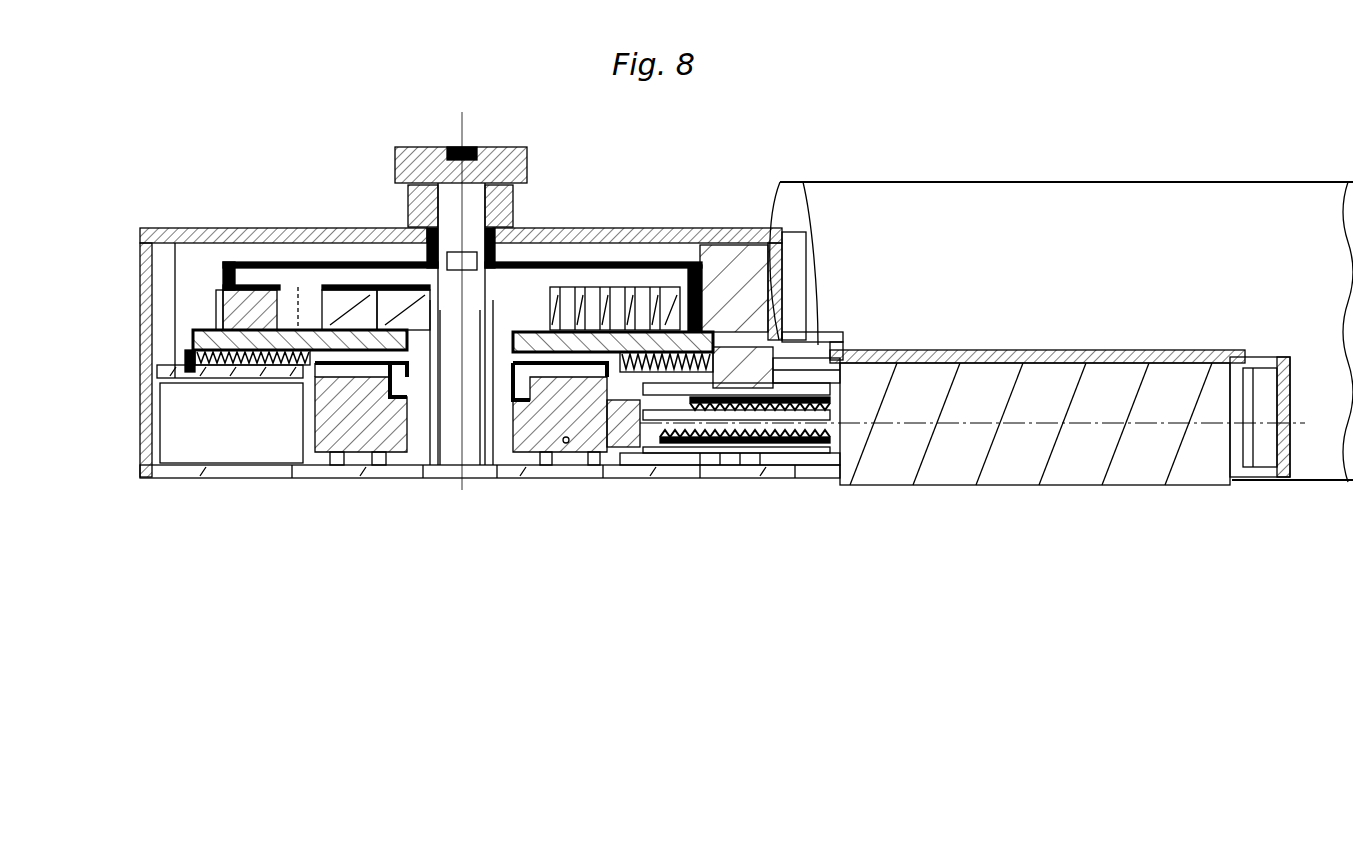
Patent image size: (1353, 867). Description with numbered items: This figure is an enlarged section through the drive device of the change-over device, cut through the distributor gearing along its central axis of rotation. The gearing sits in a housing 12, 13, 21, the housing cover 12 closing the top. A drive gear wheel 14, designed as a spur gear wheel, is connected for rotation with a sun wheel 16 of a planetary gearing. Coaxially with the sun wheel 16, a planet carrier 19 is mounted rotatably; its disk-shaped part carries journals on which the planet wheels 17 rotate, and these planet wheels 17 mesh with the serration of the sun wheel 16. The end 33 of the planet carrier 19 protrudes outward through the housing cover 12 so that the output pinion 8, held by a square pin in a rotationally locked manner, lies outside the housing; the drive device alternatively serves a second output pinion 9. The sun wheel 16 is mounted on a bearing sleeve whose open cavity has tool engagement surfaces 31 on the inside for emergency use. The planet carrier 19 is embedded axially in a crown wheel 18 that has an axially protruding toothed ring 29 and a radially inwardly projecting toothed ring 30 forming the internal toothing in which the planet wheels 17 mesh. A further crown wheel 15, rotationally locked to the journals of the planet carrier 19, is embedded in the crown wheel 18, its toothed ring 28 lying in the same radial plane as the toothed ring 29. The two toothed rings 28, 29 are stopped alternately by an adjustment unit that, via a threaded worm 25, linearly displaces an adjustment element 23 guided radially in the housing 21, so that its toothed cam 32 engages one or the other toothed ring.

The output pinion 8 is at (507, 153).
The output pinion 9 is at (513, 203).
The housing cover 12 is at (208, 228).
The housing part 13 is at (290, 478).
The drive gear wheel 14 is at (572, 450).
The crown wheel 15 is at (195, 338).
The sun wheel 16 is at (503, 465).
The planet wheels 17 is at (247, 303).
The crown wheel 18 is at (723, 263).
The planet carrier 19 is at (330, 277).
The housing part 21 is at (138, 270).
The adjustment element 23 is at (740, 478).
The threaded worm 25 is at (668, 445).
The toothed ring 28 is at (230, 383).
The toothed ring 29 is at (177, 378).
The toothed ring 30 is at (216, 307).
The tool engagement surfaces 31 is at (464, 478).
The toothed cam 32 is at (833, 340).
The end of planet carrier 33 is at (470, 147).